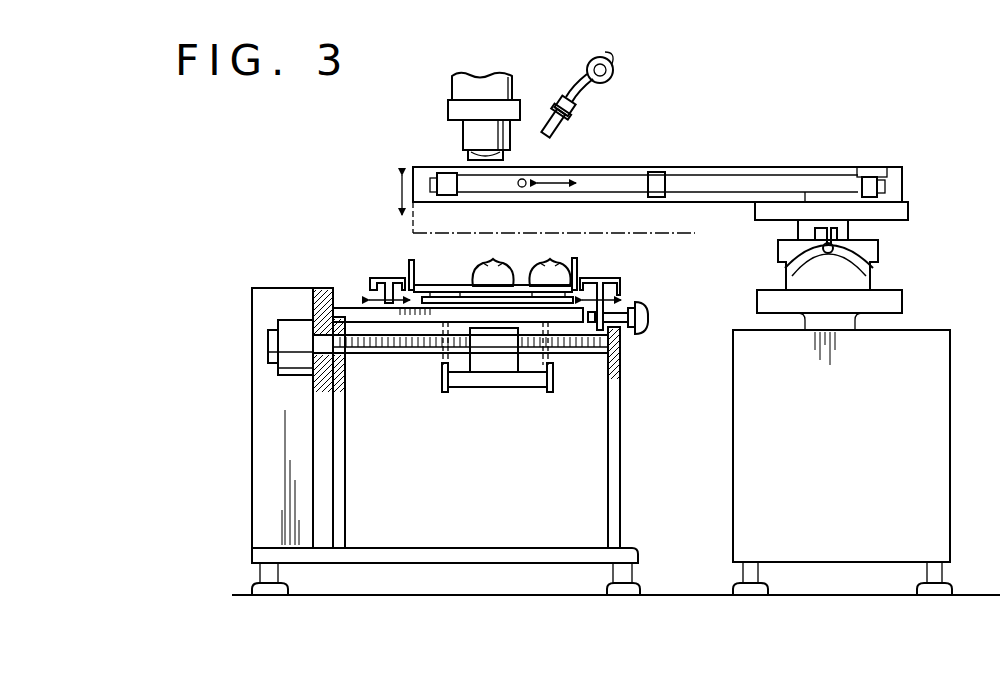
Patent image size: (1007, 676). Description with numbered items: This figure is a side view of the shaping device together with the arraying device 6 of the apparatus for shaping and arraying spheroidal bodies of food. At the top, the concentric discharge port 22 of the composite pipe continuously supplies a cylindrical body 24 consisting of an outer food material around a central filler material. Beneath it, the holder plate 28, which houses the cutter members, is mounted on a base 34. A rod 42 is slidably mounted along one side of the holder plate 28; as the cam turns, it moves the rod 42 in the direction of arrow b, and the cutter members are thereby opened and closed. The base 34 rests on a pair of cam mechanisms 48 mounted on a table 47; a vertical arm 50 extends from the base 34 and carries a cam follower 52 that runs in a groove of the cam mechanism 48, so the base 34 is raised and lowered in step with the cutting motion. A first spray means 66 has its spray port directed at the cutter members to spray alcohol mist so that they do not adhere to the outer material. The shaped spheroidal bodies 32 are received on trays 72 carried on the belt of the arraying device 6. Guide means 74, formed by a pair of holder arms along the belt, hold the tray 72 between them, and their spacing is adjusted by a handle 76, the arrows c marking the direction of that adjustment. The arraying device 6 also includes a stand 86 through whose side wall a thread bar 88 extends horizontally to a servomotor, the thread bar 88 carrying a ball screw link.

The arraying device 6 is at (325, 276).
The concentric discharge port 22 is at (470, 130).
The cylindrical body 24 is at (470, 155).
The holder plate 28 is at (420, 178).
The spheroidal bodies 32 is at (478, 266).
The base 34 is at (905, 210).
The rod 42 is at (486, 190).
The table 47 is at (938, 370).
The cam mechanisms 48 is at (875, 288).
The vertical arm 50 is at (800, 232).
The cam follower 52 is at (785, 268).
The first spray means 66 is at (577, 113).
The tray 72 is at (578, 262).
The guide means 74 is at (383, 283).
The handle 76 is at (650, 316).
The stand 86 is at (262, 458).
The thread bar 88 is at (364, 356).
The arrow b is at (565, 183).
The direction of movement c is at (497, 279).